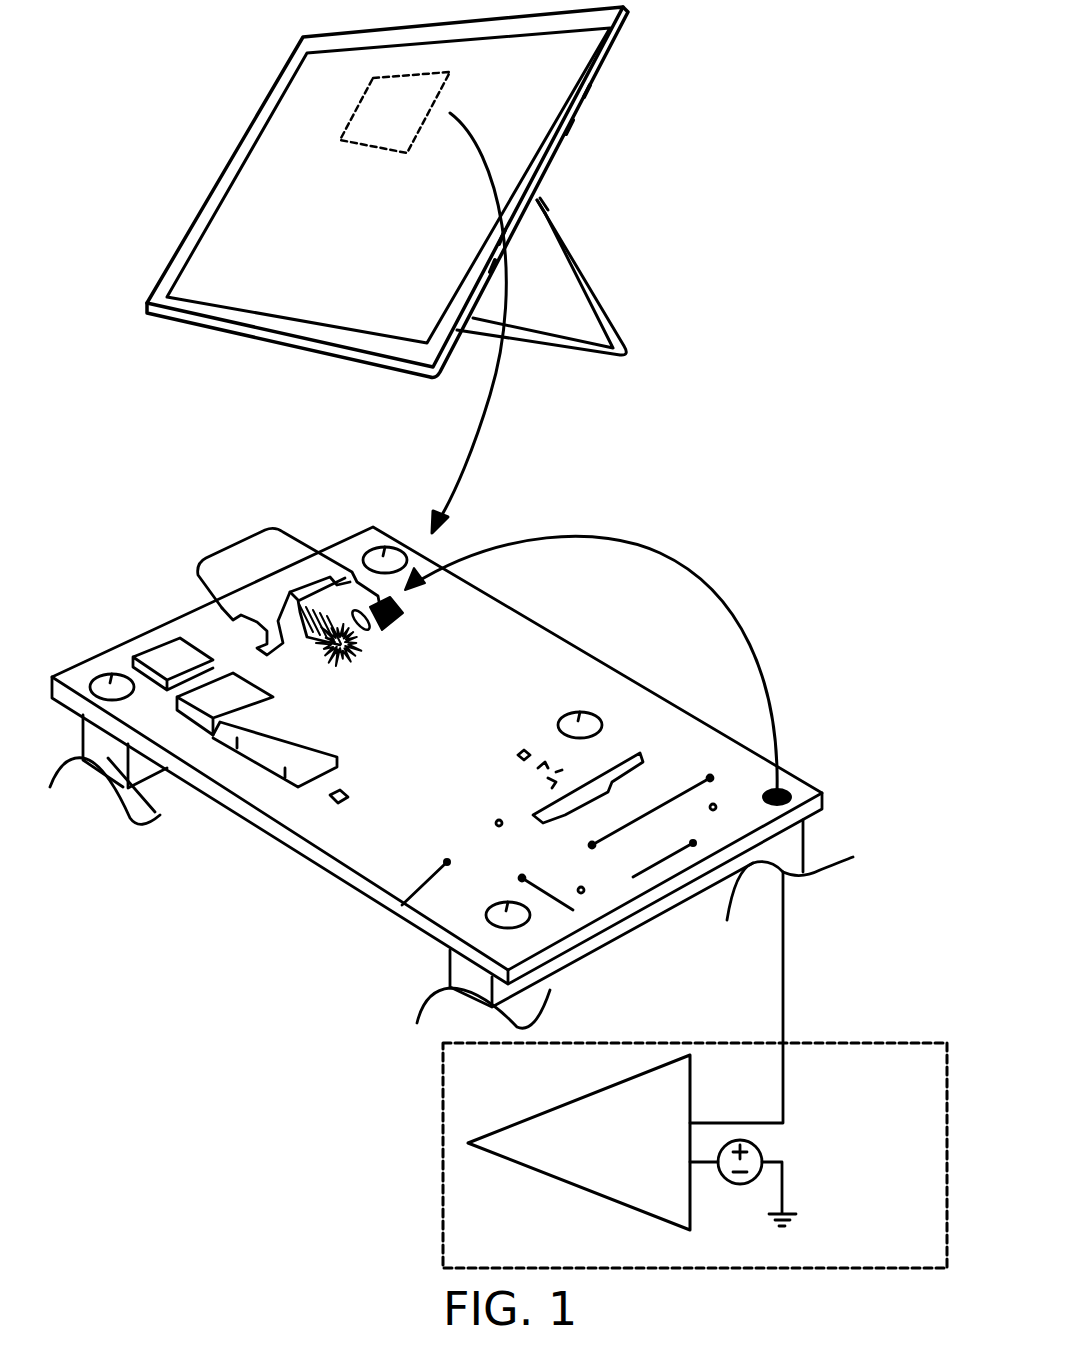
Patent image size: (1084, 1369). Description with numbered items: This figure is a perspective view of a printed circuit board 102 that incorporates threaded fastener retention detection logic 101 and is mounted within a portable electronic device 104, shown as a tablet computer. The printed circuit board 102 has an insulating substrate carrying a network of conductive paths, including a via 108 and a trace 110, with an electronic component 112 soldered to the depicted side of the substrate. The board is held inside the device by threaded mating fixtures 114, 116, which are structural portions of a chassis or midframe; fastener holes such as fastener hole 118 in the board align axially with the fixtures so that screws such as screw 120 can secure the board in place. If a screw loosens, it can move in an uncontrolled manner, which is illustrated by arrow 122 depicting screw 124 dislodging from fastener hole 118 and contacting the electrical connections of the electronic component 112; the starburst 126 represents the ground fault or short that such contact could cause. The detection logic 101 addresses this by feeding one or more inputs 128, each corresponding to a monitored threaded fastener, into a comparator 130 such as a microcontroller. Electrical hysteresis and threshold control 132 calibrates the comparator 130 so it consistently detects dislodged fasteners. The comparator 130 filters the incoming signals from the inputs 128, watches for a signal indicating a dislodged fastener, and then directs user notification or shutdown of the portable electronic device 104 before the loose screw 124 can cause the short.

The threaded fastener retention detection logic 101 is at (898, 1244).
The printed circuit board 102 is at (369, 125).
The portable electronic device 104 is at (342, 297).
The via 108 is at (403, 902).
The trace 110 is at (635, 878).
The electronic component 112 is at (252, 577).
The threaded mating fixture 114 is at (125, 790).
The threaded mating fixture 116 is at (480, 973).
The fastener hole 118 is at (785, 794).
The screw 120 is at (111, 676).
The arrow 122 is at (613, 547).
The screw 124 is at (385, 632).
The starburst 126 is at (346, 650).
The inputs 128 is at (786, 905).
The comparator 130 is at (683, 1170).
The electrical hysteresis and threshold control 132 is at (740, 1184).